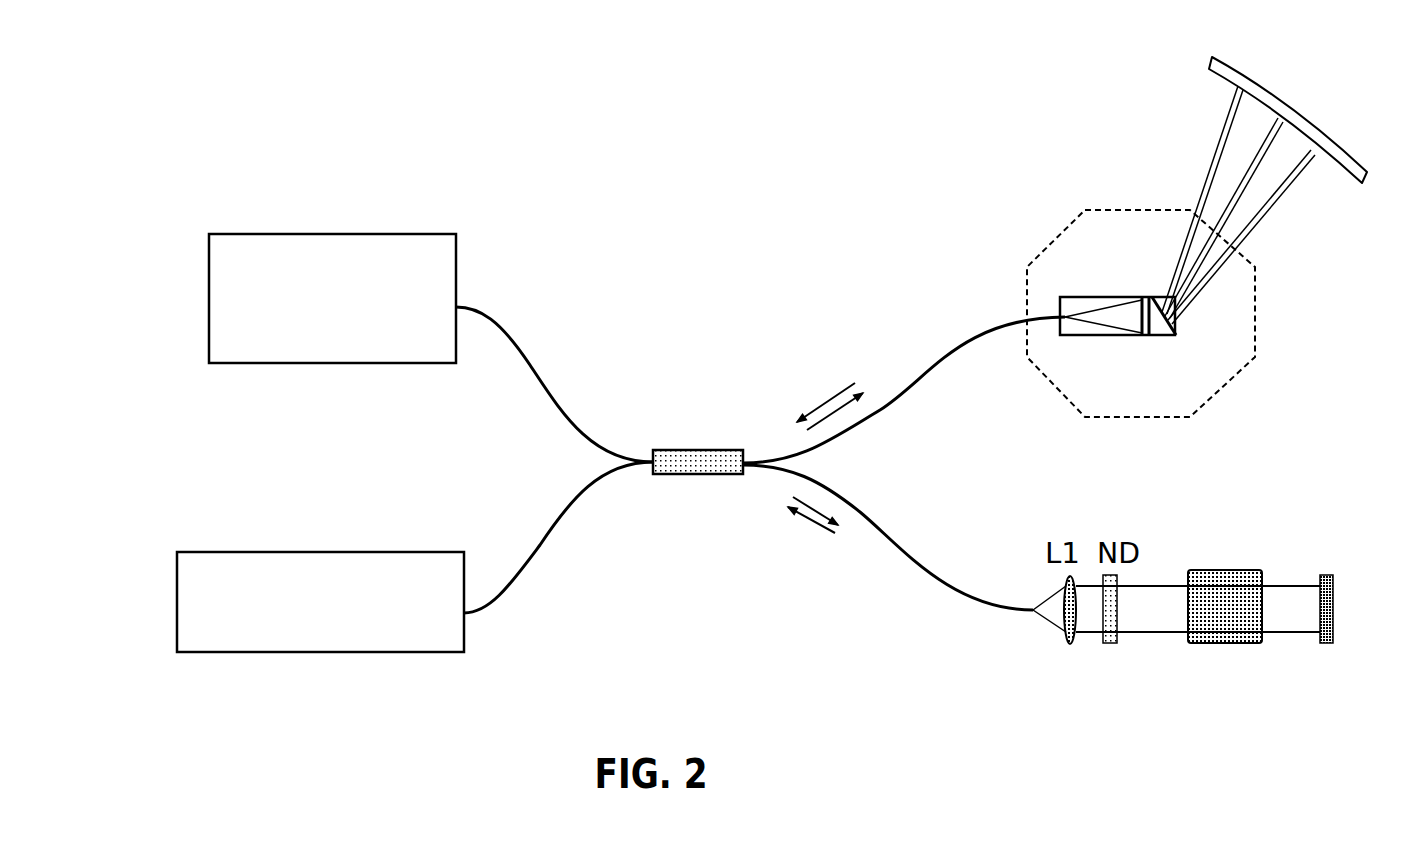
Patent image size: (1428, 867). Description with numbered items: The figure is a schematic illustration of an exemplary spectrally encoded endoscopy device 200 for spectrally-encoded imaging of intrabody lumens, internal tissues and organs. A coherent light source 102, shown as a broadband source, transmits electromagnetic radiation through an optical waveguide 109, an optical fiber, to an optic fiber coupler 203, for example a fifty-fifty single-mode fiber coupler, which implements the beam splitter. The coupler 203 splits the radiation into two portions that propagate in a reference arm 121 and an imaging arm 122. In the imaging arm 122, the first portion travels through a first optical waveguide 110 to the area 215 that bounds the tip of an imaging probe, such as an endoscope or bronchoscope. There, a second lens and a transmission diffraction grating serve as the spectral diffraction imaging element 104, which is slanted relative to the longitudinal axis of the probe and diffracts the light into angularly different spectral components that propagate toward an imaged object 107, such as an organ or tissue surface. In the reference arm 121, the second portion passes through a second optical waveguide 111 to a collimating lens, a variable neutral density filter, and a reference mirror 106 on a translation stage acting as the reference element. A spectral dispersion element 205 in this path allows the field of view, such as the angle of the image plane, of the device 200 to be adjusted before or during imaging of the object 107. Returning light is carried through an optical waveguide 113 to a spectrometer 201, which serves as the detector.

The coherent light source 102 is at (186, 297).
The spectrometer 201 is at (186, 593).
The spectrally encoded endoscopy device 200 is at (760, 428).
The optic fiber coupler 203 is at (695, 443).
The optical waveguide 109 is at (489, 345).
The optical waveguide 113 is at (514, 582).
The first optical waveguide 110 is at (955, 360).
The second optical waveguide 111 is at (867, 530).
The reference arm 121 is at (822, 381).
The imaging arm 122 is at (803, 527).
The imaging probe 215 is at (1171, 282).
The spectral diffraction imaging element 104 is at (1187, 334).
The imaged object 107 is at (1345, 142).
The spectral dispersion element 205 is at (1224, 582).
The reference mirror 106 is at (1323, 520).